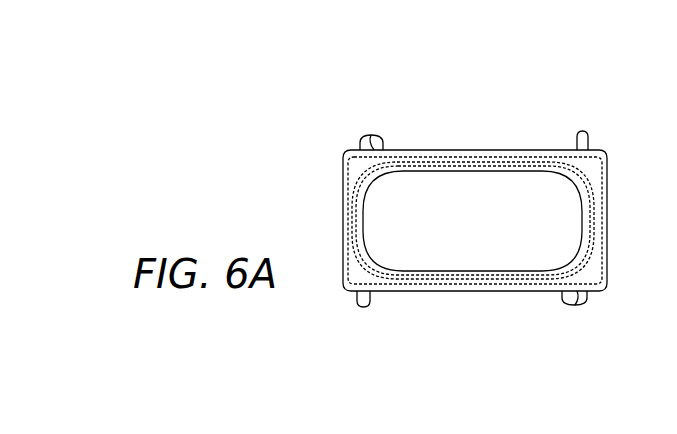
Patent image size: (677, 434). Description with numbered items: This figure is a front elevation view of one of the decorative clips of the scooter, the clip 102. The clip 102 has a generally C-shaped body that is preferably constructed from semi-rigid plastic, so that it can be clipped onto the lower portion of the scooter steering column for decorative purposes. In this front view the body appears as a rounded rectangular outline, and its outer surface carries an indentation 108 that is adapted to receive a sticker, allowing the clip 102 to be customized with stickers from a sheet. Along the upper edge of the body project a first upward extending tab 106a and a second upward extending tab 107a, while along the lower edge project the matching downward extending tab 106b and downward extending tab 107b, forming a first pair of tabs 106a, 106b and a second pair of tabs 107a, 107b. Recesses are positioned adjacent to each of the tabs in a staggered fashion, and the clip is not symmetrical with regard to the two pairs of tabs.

The decorative clip 102 is at (300, 207).
The indentation 108 is at (485, 229).
The upward extending tab 106a is at (370, 135).
The upward extending tab 107a is at (583, 131).
The downward extending tab 106b is at (364, 307).
The downward extending tab 107b is at (575, 305).